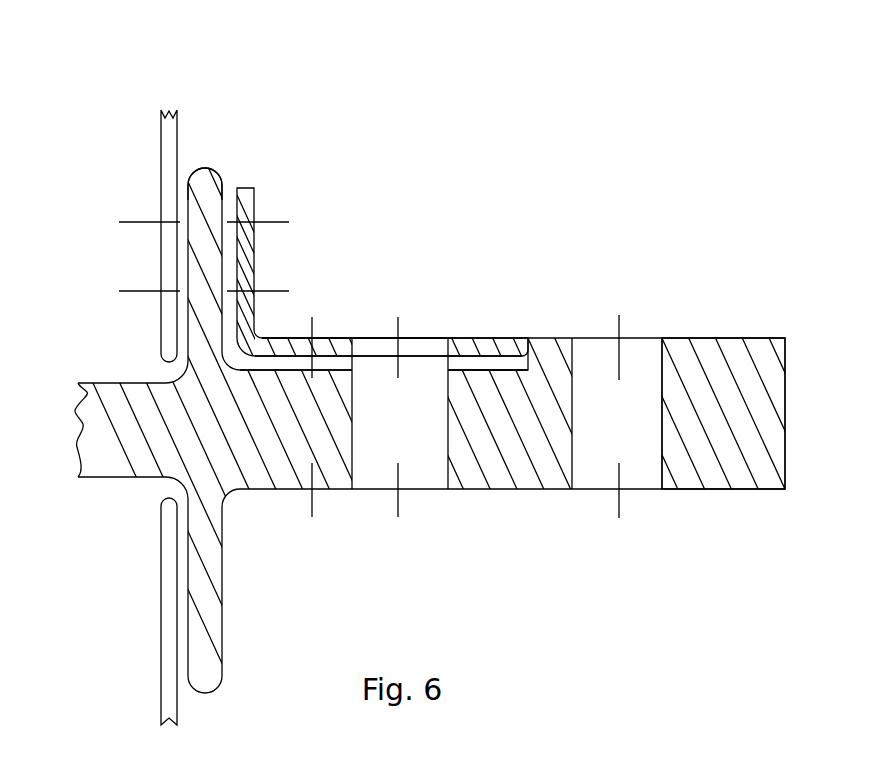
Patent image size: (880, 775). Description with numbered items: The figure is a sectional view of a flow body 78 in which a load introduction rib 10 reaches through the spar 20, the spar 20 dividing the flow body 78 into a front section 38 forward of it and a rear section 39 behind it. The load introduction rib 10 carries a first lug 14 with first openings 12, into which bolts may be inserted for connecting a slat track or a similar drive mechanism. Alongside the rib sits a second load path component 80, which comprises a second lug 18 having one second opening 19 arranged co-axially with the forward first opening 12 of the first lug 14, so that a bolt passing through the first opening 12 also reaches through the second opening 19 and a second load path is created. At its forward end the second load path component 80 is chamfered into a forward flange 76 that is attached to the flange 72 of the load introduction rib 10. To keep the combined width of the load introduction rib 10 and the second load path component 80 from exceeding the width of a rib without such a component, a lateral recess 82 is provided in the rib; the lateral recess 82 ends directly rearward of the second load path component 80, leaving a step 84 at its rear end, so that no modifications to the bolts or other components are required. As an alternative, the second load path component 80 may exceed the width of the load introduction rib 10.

The load introduction rib 10 is at (113, 397).
The first openings 12 is at (377, 492).
The first lug 14 is at (765, 477).
The second lug 18 is at (471, 345).
The second opening 19 is at (418, 345).
The spar 20 is at (176, 123).
The front section 38 is at (132, 102).
The rear section 39 is at (603, 128).
The flange 72 is at (207, 215).
The forward flange 76 is at (245, 253).
The flow body 78 is at (102, 125).
The second load path component 80 is at (283, 339).
The lateral recess 82 is at (337, 358).
The step 84 is at (497, 384).